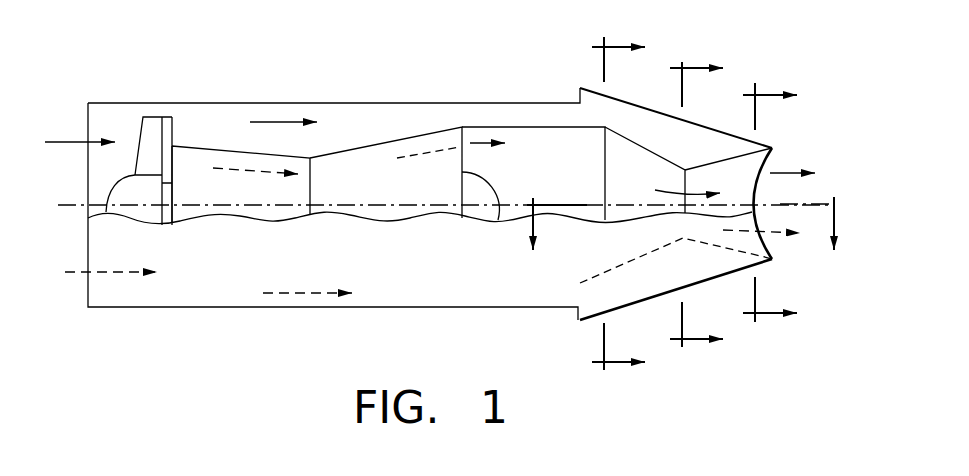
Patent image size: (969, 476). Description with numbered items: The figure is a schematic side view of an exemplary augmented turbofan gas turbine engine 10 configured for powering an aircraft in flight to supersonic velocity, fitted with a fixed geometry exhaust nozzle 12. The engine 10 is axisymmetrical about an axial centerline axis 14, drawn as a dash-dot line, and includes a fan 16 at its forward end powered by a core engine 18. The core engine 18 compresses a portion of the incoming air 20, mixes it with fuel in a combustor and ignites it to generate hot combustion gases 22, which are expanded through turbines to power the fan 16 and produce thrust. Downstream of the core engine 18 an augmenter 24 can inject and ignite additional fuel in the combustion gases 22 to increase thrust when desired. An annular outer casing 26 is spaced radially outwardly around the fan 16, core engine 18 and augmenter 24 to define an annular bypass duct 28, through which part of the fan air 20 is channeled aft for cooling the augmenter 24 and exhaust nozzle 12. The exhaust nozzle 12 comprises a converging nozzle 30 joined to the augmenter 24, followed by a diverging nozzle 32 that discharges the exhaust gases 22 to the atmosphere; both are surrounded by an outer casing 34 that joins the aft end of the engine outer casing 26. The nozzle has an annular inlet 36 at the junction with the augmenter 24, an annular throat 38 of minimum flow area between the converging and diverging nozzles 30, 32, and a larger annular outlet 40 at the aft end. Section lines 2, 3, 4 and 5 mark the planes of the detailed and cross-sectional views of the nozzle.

The augmented turbofan gas turbine engine 10 is at (432, 95).
The exhaust nozzle 12 is at (732, 85).
The axial centerline axis 14 is at (287, 205).
The fan 16 is at (163, 132).
The core engine 18 is at (348, 178).
The air 20 is at (58, 142).
The combustion gases 22 is at (475, 145).
The augmenter 24 is at (553, 127).
The outer casing 26 is at (345, 103).
The bypass duct 28 is at (352, 131).
The converging nozzle 30 is at (615, 169).
The diverging nozzle 32 is at (732, 173).
The outer casing 34 is at (595, 249).
The annular inlet 36 is at (603, 182).
The annular throat 38 is at (672, 165).
The annular outlet 40 is at (768, 240).
The section line 2- 2 is at (683, 243).
The section line 3- 3 is at (618, 205).
The section line 4- 4 is at (696, 208).
The section line 5- 5 is at (770, 207).